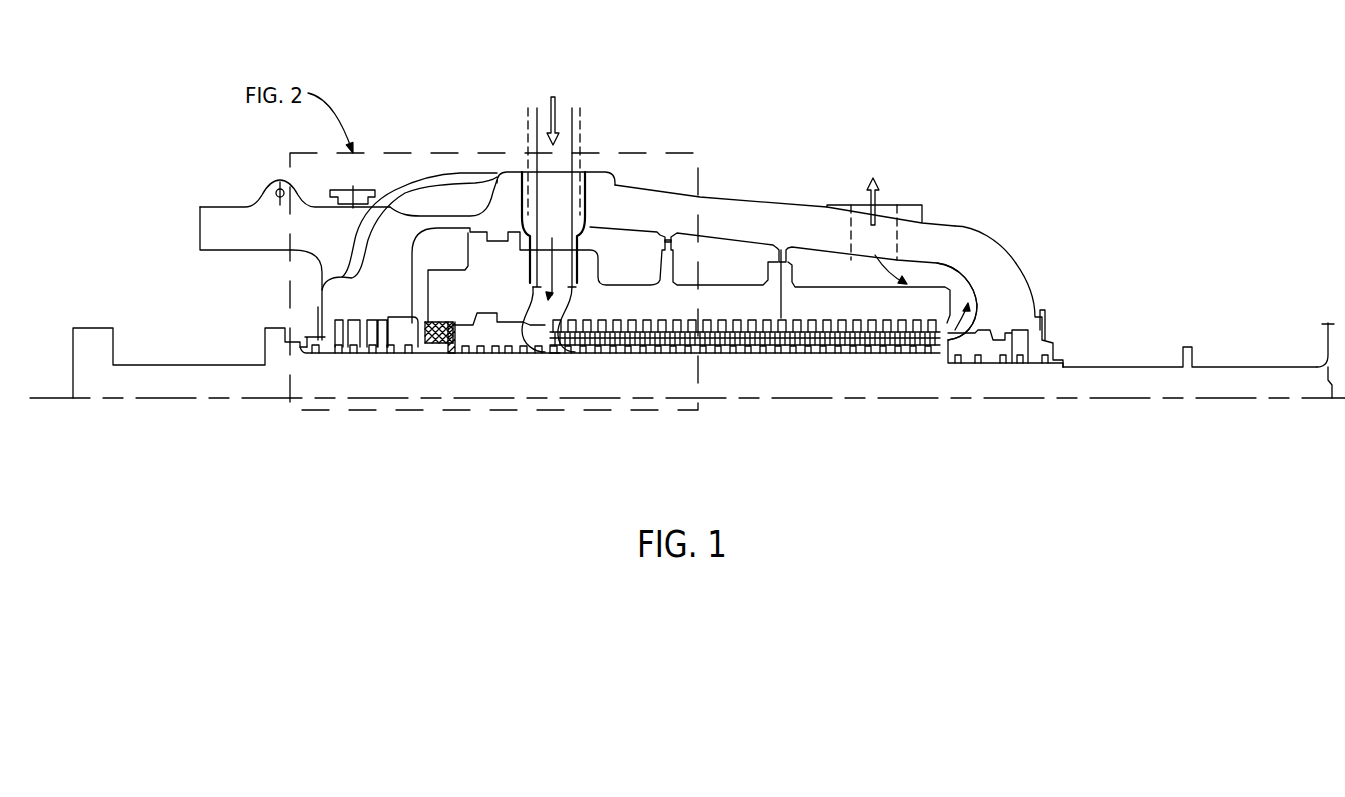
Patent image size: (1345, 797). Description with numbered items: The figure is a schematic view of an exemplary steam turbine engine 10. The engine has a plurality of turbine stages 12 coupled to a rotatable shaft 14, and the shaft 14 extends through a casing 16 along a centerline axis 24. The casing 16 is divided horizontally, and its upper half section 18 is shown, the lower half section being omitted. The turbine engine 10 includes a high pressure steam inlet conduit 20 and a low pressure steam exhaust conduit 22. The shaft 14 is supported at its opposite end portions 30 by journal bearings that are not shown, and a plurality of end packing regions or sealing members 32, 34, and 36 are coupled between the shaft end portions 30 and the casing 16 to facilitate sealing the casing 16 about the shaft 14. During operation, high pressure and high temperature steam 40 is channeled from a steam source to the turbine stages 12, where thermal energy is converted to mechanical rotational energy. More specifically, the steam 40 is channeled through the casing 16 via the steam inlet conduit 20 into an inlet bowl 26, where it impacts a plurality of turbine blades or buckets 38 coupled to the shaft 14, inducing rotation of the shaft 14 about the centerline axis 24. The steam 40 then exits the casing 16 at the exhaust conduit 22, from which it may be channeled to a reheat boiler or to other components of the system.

The steam turbine engine 10 is at (905, 52).
The turbine stages 12 is at (660, 358).
The rotatable shaft 14 is at (1231, 362).
The casing 16 is at (1012, 237).
The upper half section 18 is at (1037, 283).
The high pressure steam inlet conduit 20 is at (584, 166).
The low pressure steam exhaust conduit 22 is at (895, 199).
The centerline axis 24 is at (1273, 400).
The inlet bowl 26 is at (537, 356).
The end portions 30 is at (140, 363).
The sealing member 32 is at (375, 365).
The sealing member 34 is at (502, 365).
The sealing member 36 is at (993, 380).
The turbine blades or buckets 38 is at (712, 358).
The steam 40 is at (555, 100).